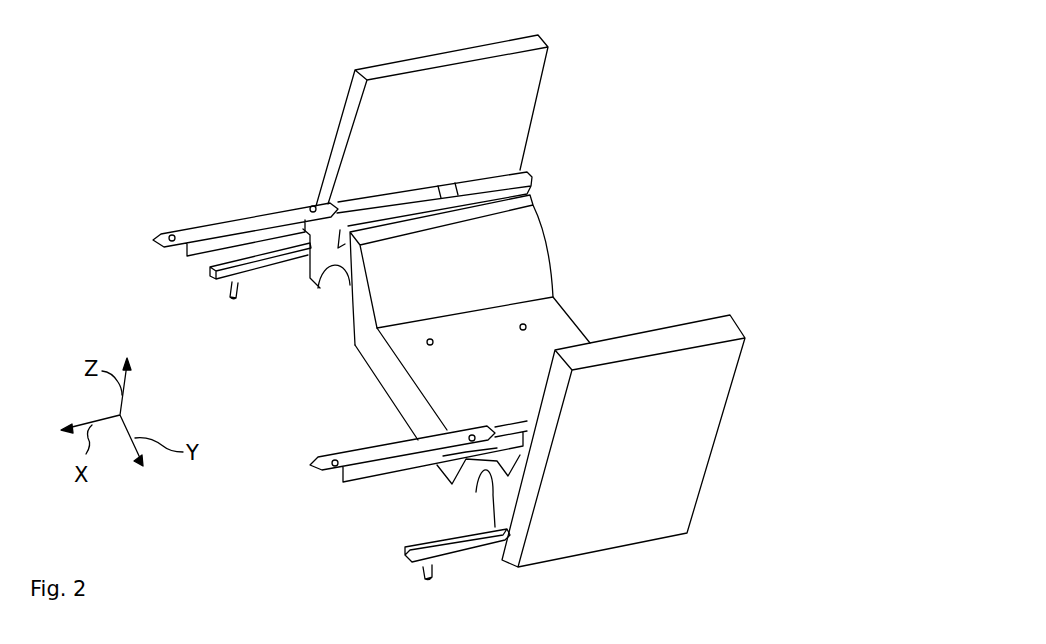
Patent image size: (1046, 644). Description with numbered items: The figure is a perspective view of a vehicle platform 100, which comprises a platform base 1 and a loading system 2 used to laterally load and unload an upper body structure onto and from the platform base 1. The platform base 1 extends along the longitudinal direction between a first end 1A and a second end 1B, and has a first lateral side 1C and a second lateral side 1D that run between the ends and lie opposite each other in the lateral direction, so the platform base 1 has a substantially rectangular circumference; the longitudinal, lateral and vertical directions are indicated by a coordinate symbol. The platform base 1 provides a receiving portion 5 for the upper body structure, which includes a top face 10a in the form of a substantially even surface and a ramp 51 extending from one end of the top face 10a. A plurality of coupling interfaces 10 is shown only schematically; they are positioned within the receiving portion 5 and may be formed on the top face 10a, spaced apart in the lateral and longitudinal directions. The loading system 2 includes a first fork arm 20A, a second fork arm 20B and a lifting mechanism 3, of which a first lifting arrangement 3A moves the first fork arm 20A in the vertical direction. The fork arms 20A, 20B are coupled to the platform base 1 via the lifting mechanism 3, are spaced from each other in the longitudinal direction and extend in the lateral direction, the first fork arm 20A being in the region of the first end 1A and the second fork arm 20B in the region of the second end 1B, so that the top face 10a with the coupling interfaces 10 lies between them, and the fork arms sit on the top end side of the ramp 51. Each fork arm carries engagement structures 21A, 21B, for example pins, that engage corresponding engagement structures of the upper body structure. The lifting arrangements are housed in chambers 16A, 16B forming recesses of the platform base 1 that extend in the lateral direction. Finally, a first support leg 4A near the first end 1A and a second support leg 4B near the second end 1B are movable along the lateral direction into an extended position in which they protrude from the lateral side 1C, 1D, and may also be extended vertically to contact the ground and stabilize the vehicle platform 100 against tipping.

The vehicle platform 100 is at (669, 80).
The platform base 1 is at (552, 263).
The first end 1A is at (529, 117).
The second end 1B is at (704, 436).
The first lateral side 1C is at (559, 334).
The second lateral side 1D is at (395, 395).
The loading system 2 is at (285, 180).
The lifting mechanism 3 is at (510, 197).
The first lifting arrangement 3A is at (470, 203).
The first support leg 4A is at (243, 273).
The second support leg 4B is at (465, 553).
The receiving portion 5 is at (467, 333).
The coupling interfaces 10 is at (433, 347).
The top face 10a is at (566, 327).
The chamber 16A is at (318, 287).
The chamber 16B is at (478, 487).
The first fork arm 20A is at (217, 219).
The second fork arm 20B is at (336, 442).
The engagement structure 21A is at (170, 236).
The engagement structure 21B is at (333, 467).
The ramp 51 is at (392, 297).